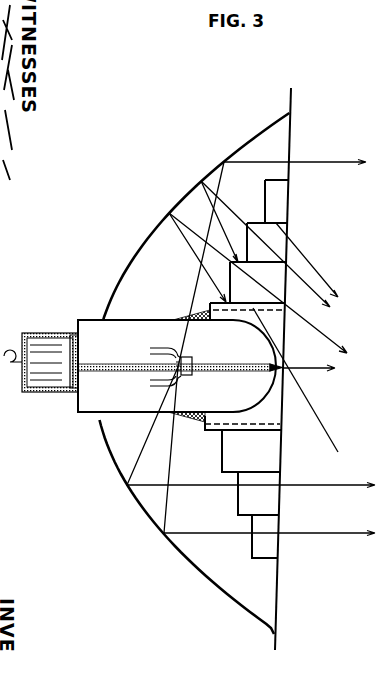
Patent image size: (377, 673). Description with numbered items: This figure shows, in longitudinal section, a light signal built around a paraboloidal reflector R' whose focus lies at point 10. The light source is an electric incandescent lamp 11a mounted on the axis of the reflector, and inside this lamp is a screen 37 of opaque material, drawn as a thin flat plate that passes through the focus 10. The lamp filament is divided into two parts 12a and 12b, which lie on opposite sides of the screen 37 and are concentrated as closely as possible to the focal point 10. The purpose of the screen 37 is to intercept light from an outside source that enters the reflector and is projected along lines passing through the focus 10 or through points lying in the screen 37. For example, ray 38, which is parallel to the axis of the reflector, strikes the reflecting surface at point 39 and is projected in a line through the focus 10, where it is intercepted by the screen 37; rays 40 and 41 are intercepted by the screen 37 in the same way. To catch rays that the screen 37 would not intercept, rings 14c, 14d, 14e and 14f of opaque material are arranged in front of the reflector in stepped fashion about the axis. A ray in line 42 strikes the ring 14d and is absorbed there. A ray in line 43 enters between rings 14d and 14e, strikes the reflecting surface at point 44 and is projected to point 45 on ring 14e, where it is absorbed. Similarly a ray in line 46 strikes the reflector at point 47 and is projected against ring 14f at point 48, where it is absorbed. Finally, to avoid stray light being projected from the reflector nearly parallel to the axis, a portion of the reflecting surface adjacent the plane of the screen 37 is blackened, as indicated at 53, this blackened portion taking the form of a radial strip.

The focus 10 is at (177, 356).
The electric incandescent lamp 11a is at (128, 413).
The filament part 12a is at (183, 360).
The filament part 12b is at (181, 377).
The ring of opaque material 14c is at (290, 181).
The ring of opaque material 14d is at (289, 222).
The ring of opaque material 14e is at (258, 282).
The ring of opaque material 14f is at (280, 318).
The screen 37 is at (206, 360).
The ray 38 is at (295, 156).
The point on reflecting surface 39 is at (205, 252).
The ray 40 is at (251, 428).
The ray 41 is at (269, 452).
The ray line 42 is at (307, 260).
The ray line 43 is at (265, 244).
The point on reflecting surface 44 is at (201, 181).
The point on screen 14e 45 is at (258, 275).
The ray line 46 is at (262, 283).
The point on reflecting surface 47 is at (169, 213).
The point on screen 14f 48 is at (247, 303).
The blackened portion of reflecting surface 53 is at (192, 424).
The paraboloidal reflector R' is at (195, 373).